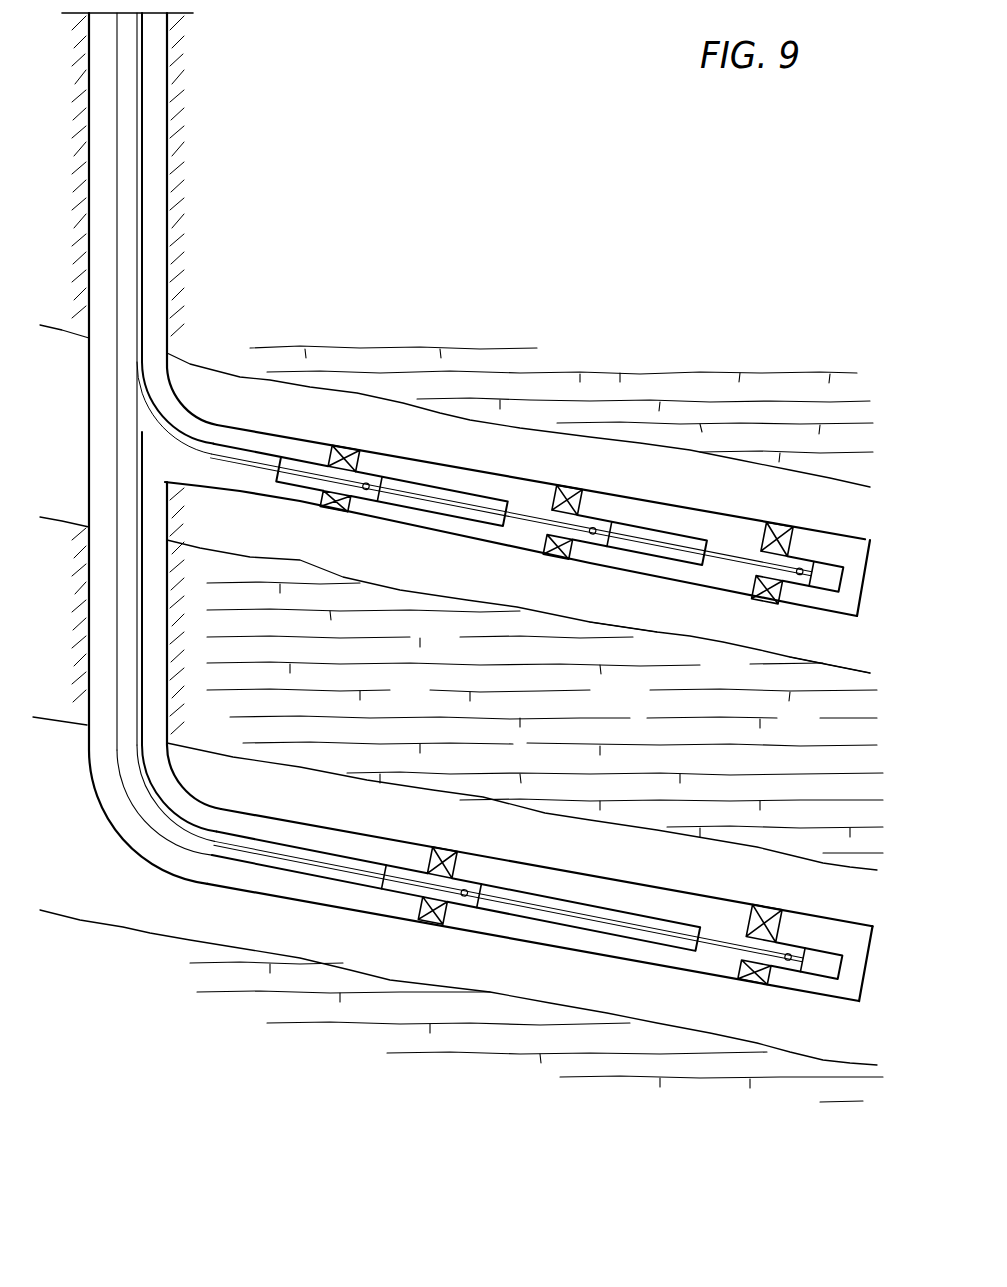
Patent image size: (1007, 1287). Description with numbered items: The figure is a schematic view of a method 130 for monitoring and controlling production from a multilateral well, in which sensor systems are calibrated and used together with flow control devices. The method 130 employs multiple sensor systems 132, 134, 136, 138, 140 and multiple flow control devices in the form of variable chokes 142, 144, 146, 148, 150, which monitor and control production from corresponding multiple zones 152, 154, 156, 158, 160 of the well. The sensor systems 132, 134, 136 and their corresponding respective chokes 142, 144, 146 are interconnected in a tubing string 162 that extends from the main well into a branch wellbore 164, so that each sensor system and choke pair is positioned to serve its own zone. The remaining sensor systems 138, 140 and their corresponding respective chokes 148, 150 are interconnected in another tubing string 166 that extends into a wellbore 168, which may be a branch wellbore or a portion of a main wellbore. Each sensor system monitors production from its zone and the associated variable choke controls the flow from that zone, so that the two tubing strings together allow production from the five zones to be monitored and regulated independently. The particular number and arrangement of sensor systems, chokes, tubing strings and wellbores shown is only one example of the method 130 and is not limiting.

The method 130 is at (566, 236).
The sensor system 132 is at (306, 462).
The sensor system 134 is at (542, 503).
The sensor system 136 is at (745, 541).
The sensor system 138 is at (415, 858).
The sensor system 140 is at (732, 921).
The variable choke 142 is at (372, 478).
The variable choke 144 is at (607, 514).
The variable choke 146 is at (807, 553).
The variable choke 148 is at (473, 882).
The variable choke 150 is at (801, 937).
The zone 152 is at (442, 561).
The zone 154 is at (657, 603).
The zone 156 is at (817, 638).
The zone 158 is at (548, 957).
The zone 160 is at (808, 1013).
The tubing string 162 is at (206, 438).
The branch wellbore 164 is at (252, 497).
The tubing string 166 is at (150, 827).
The wellbore 168 is at (188, 880).